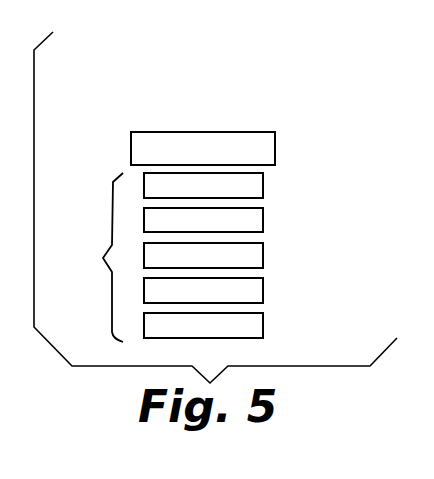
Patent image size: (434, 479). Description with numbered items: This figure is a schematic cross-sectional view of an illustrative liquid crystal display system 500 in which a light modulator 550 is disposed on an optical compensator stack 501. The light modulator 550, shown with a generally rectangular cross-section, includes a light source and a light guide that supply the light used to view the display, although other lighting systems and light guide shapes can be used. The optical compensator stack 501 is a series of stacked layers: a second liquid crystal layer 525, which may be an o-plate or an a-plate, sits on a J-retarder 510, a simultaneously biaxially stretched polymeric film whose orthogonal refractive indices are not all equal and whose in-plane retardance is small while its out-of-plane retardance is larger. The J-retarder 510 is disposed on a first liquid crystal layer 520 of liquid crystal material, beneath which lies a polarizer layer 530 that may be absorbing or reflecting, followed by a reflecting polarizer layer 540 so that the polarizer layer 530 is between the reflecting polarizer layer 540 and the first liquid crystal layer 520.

The display system 500 is at (278, 105).
The optical compensator stack 501 is at (89, 257).
The J-retarder 510 is at (255, 221).
The first liquid crystal layer 520 is at (255, 257).
The second liquid crystal layer 525 is at (255, 186).
The polarizer layer 530 is at (255, 292).
The reflecting polarizer layer 540 is at (255, 328).
The light modulator 550 is at (269, 152).